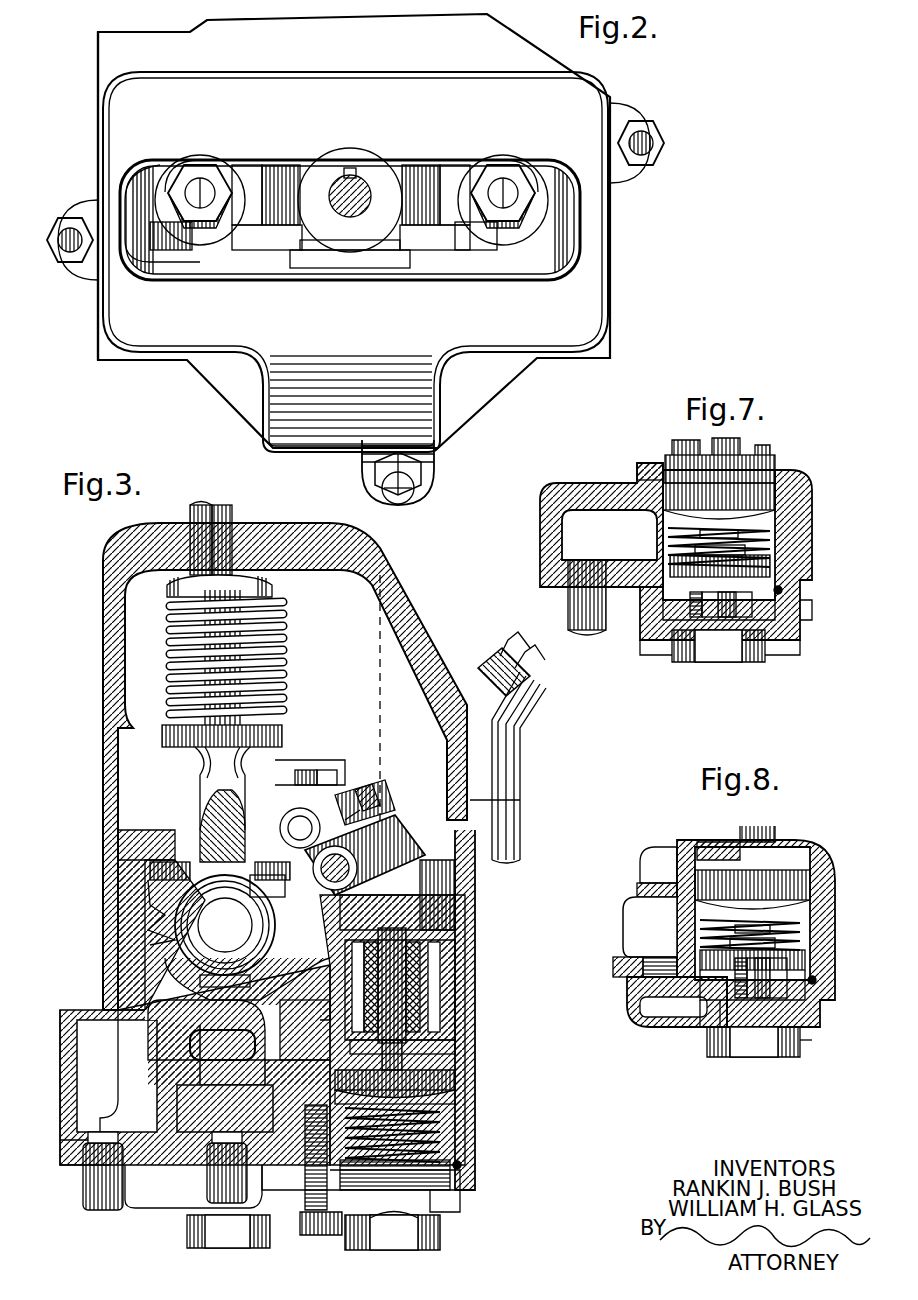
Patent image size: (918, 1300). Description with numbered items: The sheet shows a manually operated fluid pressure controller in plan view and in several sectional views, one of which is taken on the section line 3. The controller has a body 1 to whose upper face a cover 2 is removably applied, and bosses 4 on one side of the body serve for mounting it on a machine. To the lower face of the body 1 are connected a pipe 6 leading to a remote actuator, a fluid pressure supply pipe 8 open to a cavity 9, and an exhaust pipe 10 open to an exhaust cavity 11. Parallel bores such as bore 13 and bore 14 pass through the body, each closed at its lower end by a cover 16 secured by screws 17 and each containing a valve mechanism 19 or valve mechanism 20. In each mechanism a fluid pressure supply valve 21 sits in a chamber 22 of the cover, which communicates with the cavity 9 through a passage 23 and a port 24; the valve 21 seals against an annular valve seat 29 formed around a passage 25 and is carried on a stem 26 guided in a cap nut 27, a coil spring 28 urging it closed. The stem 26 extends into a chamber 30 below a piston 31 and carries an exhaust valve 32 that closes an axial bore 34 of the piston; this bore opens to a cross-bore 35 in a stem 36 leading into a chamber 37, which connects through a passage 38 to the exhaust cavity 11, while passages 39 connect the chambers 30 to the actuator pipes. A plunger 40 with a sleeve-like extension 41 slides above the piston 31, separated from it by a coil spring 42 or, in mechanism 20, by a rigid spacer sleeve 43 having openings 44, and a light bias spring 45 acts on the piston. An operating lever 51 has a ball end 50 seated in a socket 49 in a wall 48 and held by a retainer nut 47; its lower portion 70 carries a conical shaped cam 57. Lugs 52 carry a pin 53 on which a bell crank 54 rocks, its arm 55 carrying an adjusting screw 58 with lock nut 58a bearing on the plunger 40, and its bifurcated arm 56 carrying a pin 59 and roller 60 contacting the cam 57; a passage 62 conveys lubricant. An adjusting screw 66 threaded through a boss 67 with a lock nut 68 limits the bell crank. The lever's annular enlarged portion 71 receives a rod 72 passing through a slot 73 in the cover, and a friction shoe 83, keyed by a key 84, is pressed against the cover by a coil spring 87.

In FIG. 2, the body 1 is at (478, 380).
In FIG. 3, the body 1 is at (478, 895).
In FIG. 7, the body 1 is at (800, 525).
In FIG. 8, the body 1 is at (835, 865).
In FIG. 2, the cover 2 is at (580, 320).
In FIG. 3, the cover 2 is at (385, 612).
In FIG. 3, the contact bridge 3 is at (314, 764).
In FIG. 2, the bosses 4 is at (98, 100).
In FIG. 7, the pipe 6 is at (572, 612).
In FIG. 3, the fluid pressure supply pipe 8 is at (215, 1185).
In FIG. 3, the cavity 9 is at (185, 1115).
In FIG. 8, the cavity 9 is at (623, 930).
In FIG. 3, the exhaust pipe 10 is at (85, 1193).
In FIG. 3, the exhaust cavity 11 is at (90, 1082).
In FIG. 8, the exhaust cavity 11 is at (658, 852).
In FIG. 7, the bore 13 is at (800, 615).
In FIG. 8, the bore 13 is at (810, 960).
In FIG. 3, the bore 14 is at (445, 925).
In FIG. 3, the cover 16 is at (268, 1210).
In FIG. 7, the cover 16 is at (778, 650).
In FIG. 8, the cover 16 is at (635, 1020).
In FIG. 3, the screws 17 is at (321, 1238).
In FIG. 7, the valve mechanism 19 is at (770, 565).
In FIG. 8, the valve mechanism 19 is at (805, 925).
In FIG. 3, the valve mechanism 20 is at (450, 1140).
In FIG. 8, the fluid pressure supply valve 21 is at (822, 1005).
In FIG. 7, the chamber 22 is at (692, 615).
In FIG. 8, the chamber 22 is at (725, 1010).
In FIG. 8, the passage 23 is at (700, 1005).
In FIG. 8, the port 24 is at (630, 990).
In FIG. 8, the passage 25 is at (735, 975).
In FIG. 7, the stem 26 is at (720, 615).
In FIG. 8, the stem 26 is at (755, 985).
In FIG. 3, the cap nut 27 is at (208, 1240).
In FIG. 7, the cap nut 27 is at (742, 660).
In FIG. 8, the cap nut 27 is at (800, 1045).
In FIG. 7, the coil spring 28 is at (790, 625).
In FIG. 8, the coil spring 28 is at (730, 1057).
In FIG. 7, the annular valve seat 29 is at (695, 552).
In FIG. 8, the annular valve seat 29 is at (805, 948).
In FIG. 3, the chamber 30 is at (460, 1168).
In FIG. 7, the chamber 30 is at (782, 592).
In FIG. 8, the chamber 30 is at (816, 984).
In FIG. 3, the piston 31 is at (440, 1098).
In FIG. 7, the piston 31 is at (775, 497).
In FIG. 8, the piston 31 is at (810, 890).
In FIG. 7, the exhaust valve 32 is at (705, 535).
In FIG. 8, the exhaust valve 32 is at (735, 930).
In FIG. 3, the axial bore 34 is at (445, 1075).
In FIG. 3, the cross-bore 35 is at (400, 1060).
In FIG. 3, the stem 36 is at (395, 990).
In FIG. 3, the chamber 37 is at (320, 1030).
In FIG. 7, the chamber 37 is at (660, 473).
In FIG. 8, the chamber 37 is at (700, 850).
In FIG. 3, the passage 38 is at (190, 1045).
In FIG. 7, the passages 39 is at (565, 540).
In FIG. 3, the plunger 40 is at (455, 968).
In FIG. 3, the sleeve-like extension 41 is at (435, 955).
In FIG. 7, the coil spring 42 is at (697, 450).
In FIG. 3, the rigid spacer sleeve 43 is at (430, 1040).
In FIG. 3, the openings 44 is at (430, 1015).
In FIG. 3, the bias spring 45 is at (440, 1130).
In FIG. 7, the bias spring 45 is at (770, 540).
In FIG. 8, the bias spring 45 is at (700, 925).
In FIG. 3, the retainer nut 47 is at (160, 905).
In FIG. 3, the wall 48 is at (175, 977).
In FIG. 3, the socket 49 is at (175, 945).
In FIG. 3, the ball end 50 is at (190, 925).
In FIG. 2, the operating lever 51 is at (366, 178).
In FIG. 3, the operating lever 51 is at (195, 515).
In FIG. 3, the lugs 52 is at (150, 870).
In FIG. 3, the pin 53 is at (345, 872).
In FIG. 2, the bell crank 54 is at (240, 178).
In FIG. 3, the bell crank 54 is at (360, 790).
In FIG. 2, the arm 55 is at (150, 182).
In FIG. 3, the arm 55 is at (455, 880).
In FIG. 2, the arm 56 is at (262, 240).
In FIG. 3, the arm 56 is at (322, 765).
In FIG. 3, the conical shaped cam 57 is at (208, 810).
In FIG. 2, the adjusting screw 58 is at (196, 182).
In FIG. 3, the adjusting screw 58 is at (375, 800).
In FIG. 2, the lock nut 58a is at (200, 178).
In FIG. 3, the lock nut 58a is at (372, 800).
In FIG. 3, the pin 59 is at (292, 812).
In FIG. 2, the roller 60 is at (278, 178).
In FIG. 3, the roller 60 is at (295, 770).
In FIG. 2, the passage 62 is at (232, 225).
In FIG. 2, the adjusting screw 66 is at (62, 252).
In FIG. 3, the adjusting screw 66 is at (522, 800).
In FIG. 2, the boss 67 is at (88, 205).
In FIG. 3, the boss 67 is at (521, 782).
In FIG. 2, the lock nut 68 is at (60, 220).
In FIG. 3, the lock nut 68 is at (520, 695).
In FIG. 3, the portion 70 is at (198, 762).
In FIG. 3, the annular enlarged portion 71 is at (162, 735).
In FIG. 3, the rod 72 is at (228, 515).
In FIG. 2, the slot 73 is at (575, 222).
In FIG. 3, the slot 73 is at (268, 535).
In FIG. 2, the friction shoe 83 is at (318, 175).
In FIG. 3, the friction shoe 83 is at (168, 590).
In FIG. 2, the key 84 is at (350, 168).
In FIG. 3, the coil spring 87 is at (280, 667).